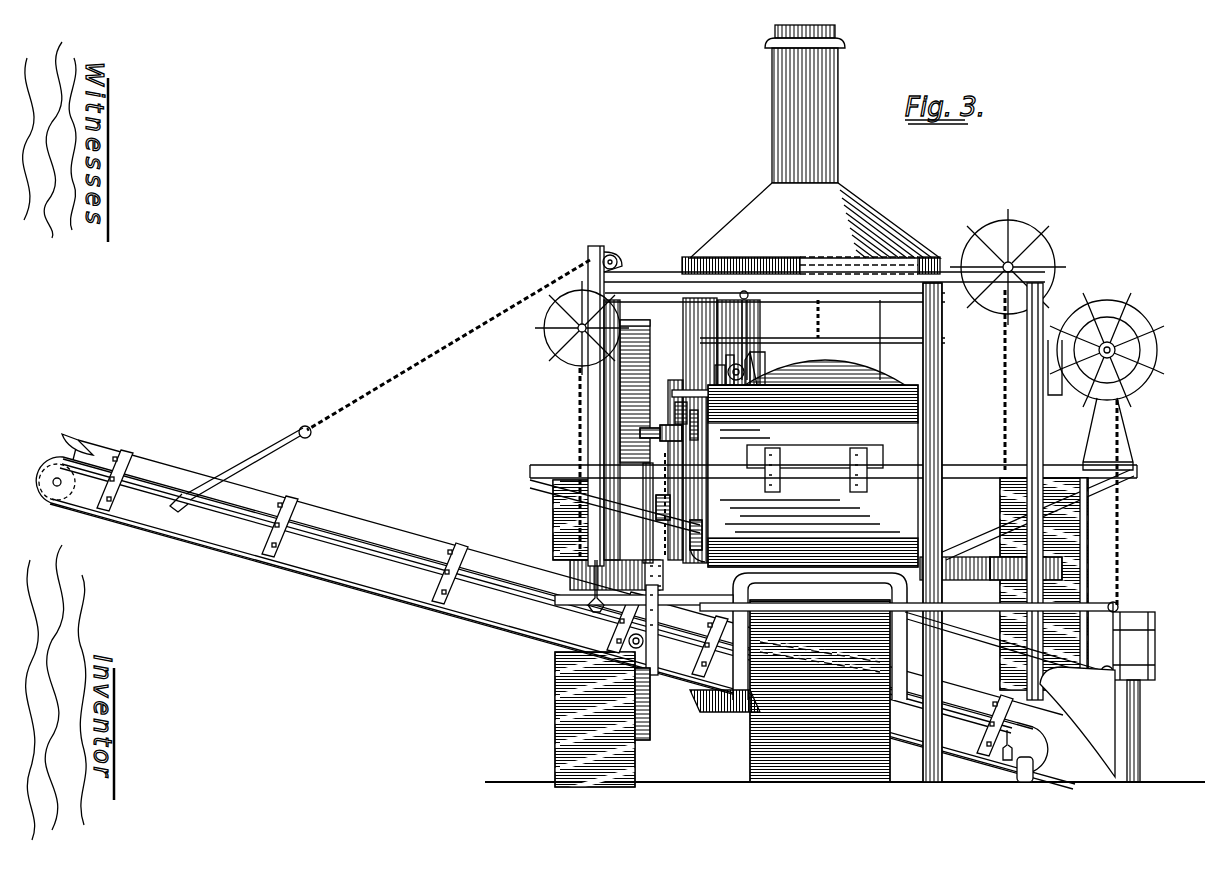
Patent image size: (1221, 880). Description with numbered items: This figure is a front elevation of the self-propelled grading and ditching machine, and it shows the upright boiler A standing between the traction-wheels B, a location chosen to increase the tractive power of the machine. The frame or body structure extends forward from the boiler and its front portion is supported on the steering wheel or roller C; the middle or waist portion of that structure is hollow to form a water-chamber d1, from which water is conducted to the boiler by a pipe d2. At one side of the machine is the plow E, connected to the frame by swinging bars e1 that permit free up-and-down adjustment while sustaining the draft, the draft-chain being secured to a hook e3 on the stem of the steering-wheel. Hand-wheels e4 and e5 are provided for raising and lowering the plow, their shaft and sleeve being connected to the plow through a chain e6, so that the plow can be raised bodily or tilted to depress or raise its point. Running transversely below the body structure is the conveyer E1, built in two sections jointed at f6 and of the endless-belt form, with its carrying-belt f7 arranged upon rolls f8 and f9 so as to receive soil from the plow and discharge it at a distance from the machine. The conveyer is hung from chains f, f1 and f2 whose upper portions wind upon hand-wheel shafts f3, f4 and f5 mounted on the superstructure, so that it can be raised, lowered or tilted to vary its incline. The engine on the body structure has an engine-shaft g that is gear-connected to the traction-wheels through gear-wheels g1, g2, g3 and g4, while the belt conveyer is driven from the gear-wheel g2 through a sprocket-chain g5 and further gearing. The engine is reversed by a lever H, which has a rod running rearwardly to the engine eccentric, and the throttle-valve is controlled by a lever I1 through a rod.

The upright boiler A is at (850, 210).
The traction-wheels B is at (553, 510).
The steering wheel or roller C is at (813, 571).
The plow E is at (1103, 713).
The inclined conveyor E1 is at (405, 528).
The lever H is at (885, 340).
The lever I1 is at (686, 322).
The water-chamber d1 is at (712, 560).
The pipe d2 is at (710, 392).
The swinging bars e1 is at (1083, 603).
The hook e3 is at (760, 356).
The hand-wheel e4 is at (1118, 305).
The hand-wheel e5 is at (1125, 348).
The chain e6 is at (740, 362).
The chain f is at (1003, 355).
The chain f1 is at (577, 400).
The chain f2 is at (408, 368).
The hand-wheel shaft f3 is at (565, 335).
The hand-wheel shaft f4 is at (812, 307).
The hand-wheel shaft f5 is at (1030, 225).
The joint f6 is at (592, 604).
The carrying-belt f7 is at (365, 588).
The roll f8 is at (78, 440).
The roll f9 is at (1015, 728).
The engine-shaft g is at (674, 412).
The gear-wheel g1 is at (700, 420).
The gear-wheel g2 is at (700, 428).
The gear-wheel g3 is at (698, 532).
The gear-wheel g4 is at (648, 727).
The sprocket-chain g5 is at (665, 508).